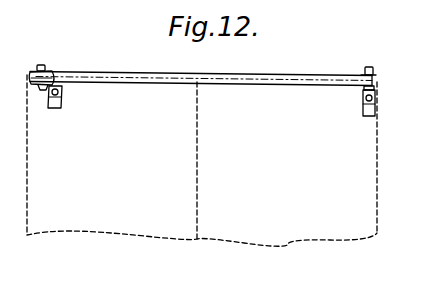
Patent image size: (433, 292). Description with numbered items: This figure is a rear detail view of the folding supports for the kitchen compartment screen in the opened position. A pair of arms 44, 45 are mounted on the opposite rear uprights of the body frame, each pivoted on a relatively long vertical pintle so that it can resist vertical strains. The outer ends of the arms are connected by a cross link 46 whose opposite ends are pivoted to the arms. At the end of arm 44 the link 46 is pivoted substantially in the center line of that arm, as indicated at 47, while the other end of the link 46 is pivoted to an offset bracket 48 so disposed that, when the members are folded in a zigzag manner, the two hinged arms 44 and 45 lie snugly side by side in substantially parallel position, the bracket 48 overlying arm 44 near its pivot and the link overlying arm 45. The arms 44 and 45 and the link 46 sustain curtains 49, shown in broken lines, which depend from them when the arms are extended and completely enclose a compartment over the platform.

The arm 44 is at (368, 90).
The arm 45 is at (54, 97).
The cross link 46 is at (261, 78).
The pivot 47 is at (367, 74).
The offset bracket 48 is at (52, 83).
The curtains 49 is at (168, 223).